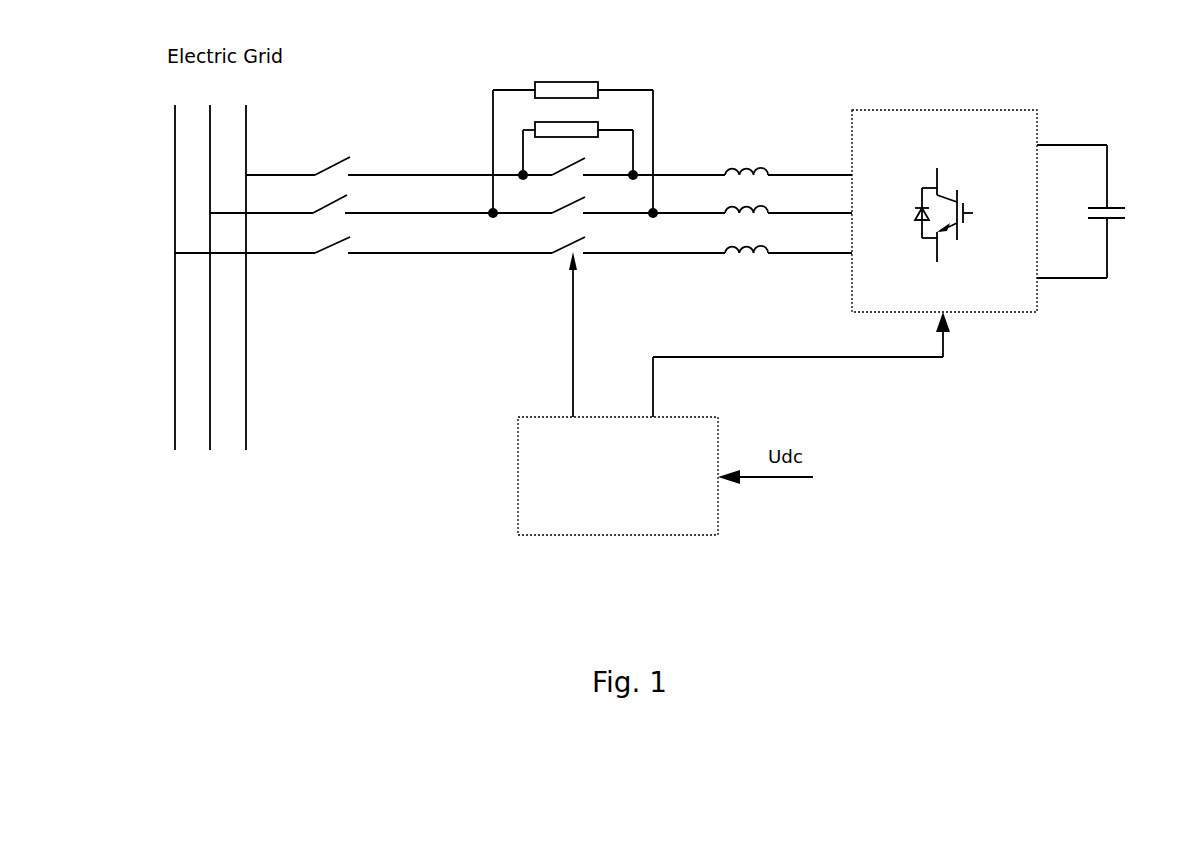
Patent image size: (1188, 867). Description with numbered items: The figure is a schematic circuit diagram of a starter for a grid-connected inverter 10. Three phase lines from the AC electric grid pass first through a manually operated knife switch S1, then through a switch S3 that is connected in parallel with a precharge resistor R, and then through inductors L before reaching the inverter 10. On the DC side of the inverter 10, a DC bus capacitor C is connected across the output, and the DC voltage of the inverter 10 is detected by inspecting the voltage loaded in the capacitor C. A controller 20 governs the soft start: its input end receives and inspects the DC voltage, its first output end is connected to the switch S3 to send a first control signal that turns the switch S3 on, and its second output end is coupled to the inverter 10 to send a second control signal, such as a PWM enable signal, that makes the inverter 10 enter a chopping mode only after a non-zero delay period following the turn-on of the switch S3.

The grid-connected inverter 10 is at (946, 110).
The controller 20 is at (618, 535).
The knife switch S1 is at (331, 193).
The switch S3 is at (559, 222).
The resistor R is at (573, 136).
The filter inductor L is at (746, 195).
The capacitor C is at (1099, 211).